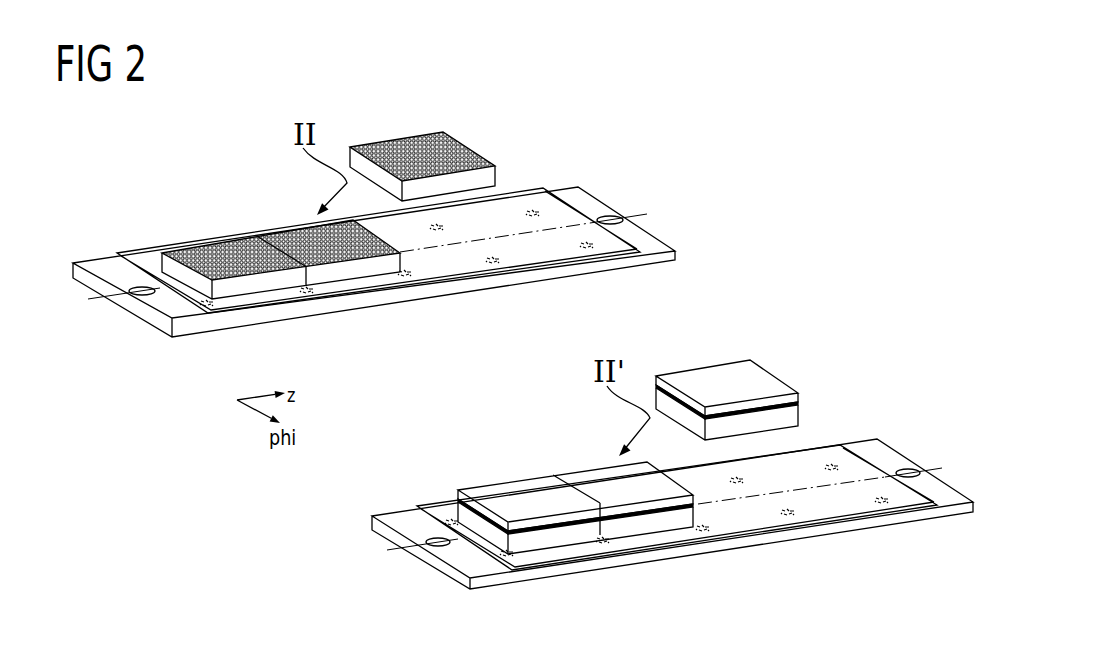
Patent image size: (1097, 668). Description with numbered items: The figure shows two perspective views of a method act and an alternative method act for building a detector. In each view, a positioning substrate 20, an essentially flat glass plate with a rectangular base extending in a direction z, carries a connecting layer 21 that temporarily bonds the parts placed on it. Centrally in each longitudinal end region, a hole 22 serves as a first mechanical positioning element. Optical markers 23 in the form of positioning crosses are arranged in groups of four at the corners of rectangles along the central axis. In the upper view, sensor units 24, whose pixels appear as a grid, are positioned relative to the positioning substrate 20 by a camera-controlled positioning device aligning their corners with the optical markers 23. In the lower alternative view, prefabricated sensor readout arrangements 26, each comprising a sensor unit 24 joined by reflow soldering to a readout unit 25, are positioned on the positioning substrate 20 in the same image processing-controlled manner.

The positioning substrate 20 is at (105, 266).
The connecting layer 21 is at (150, 258).
The hole 22 is at (612, 217).
The optical markers 23 is at (533, 213).
The sensor unit 24 is at (222, 244).
The readout unit 25 is at (712, 377).
The sensor readout arrangement 26 is at (768, 350).